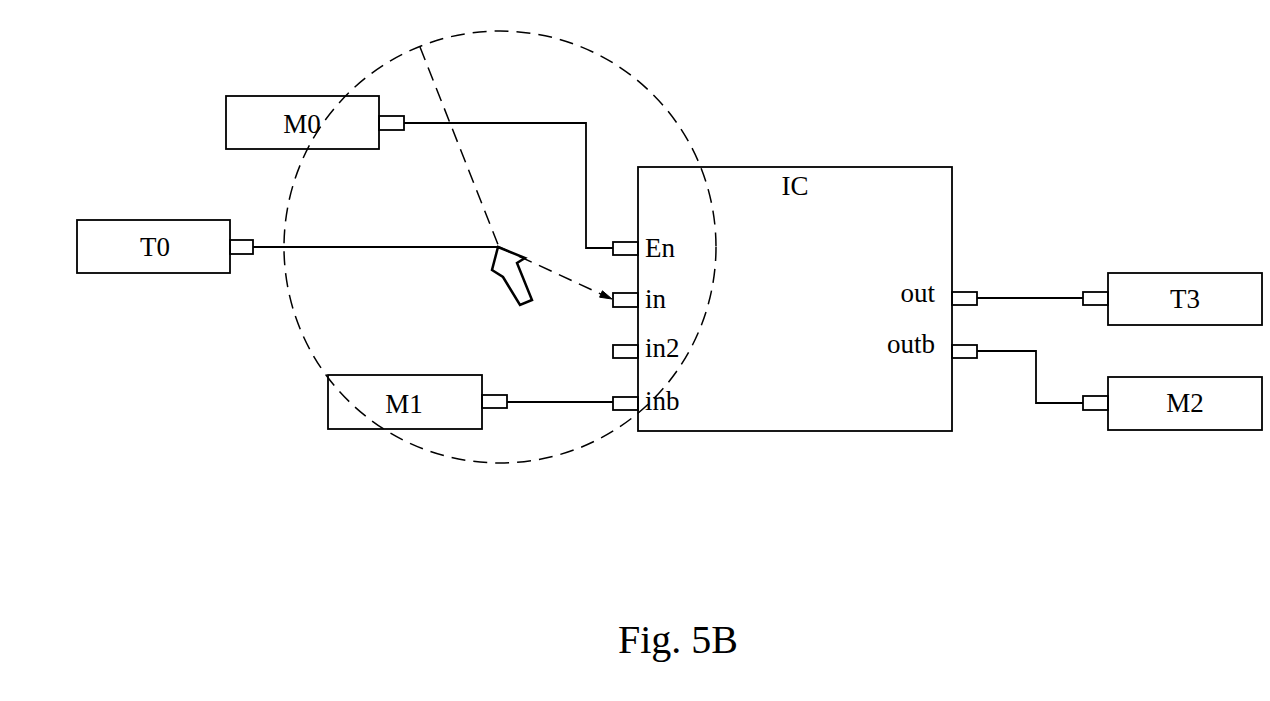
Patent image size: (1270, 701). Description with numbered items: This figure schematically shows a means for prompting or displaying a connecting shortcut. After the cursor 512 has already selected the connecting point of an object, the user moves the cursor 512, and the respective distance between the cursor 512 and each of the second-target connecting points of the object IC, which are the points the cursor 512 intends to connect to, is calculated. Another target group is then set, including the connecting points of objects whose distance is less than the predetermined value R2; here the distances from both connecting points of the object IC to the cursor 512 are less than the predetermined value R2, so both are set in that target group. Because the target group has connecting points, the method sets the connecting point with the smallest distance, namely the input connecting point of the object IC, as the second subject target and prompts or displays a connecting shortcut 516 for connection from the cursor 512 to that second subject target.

The cursor 512 is at (507, 284).
The dashed connection from circle center to IC input in 516 is at (554, 283).
The predetermined value R2 is at (468, 147).